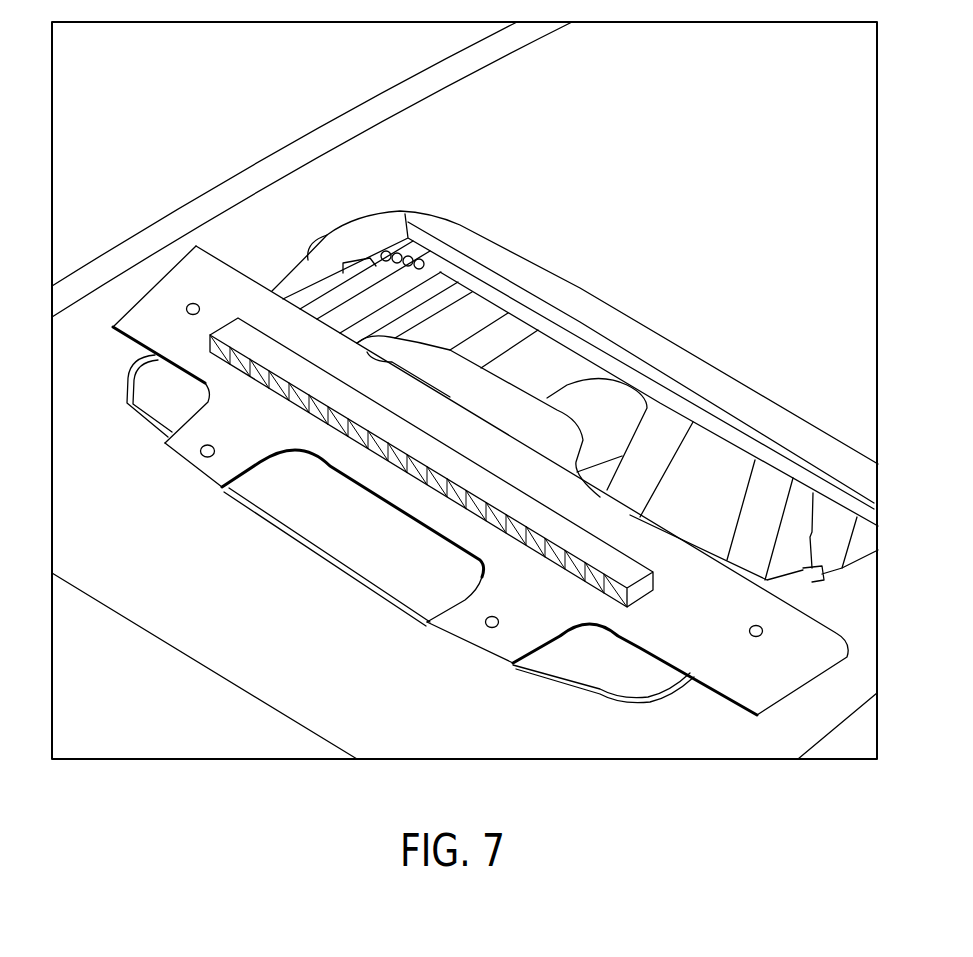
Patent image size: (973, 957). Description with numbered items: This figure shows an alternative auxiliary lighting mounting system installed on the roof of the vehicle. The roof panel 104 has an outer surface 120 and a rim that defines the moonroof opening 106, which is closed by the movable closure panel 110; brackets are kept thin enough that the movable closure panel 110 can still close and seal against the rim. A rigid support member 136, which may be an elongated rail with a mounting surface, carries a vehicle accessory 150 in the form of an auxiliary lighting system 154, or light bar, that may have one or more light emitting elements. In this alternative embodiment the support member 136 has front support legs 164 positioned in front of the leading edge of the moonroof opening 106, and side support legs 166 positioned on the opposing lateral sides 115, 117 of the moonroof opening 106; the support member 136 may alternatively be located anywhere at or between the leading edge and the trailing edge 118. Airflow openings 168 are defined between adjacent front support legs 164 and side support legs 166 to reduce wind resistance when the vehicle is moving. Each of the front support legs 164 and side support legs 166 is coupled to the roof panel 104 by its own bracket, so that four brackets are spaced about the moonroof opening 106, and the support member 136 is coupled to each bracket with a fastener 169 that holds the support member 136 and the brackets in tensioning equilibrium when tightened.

The roof panel 104 is at (786, 106).
The outer surface 120 is at (786, 178).
The lateral side 117 is at (268, 237).
The movable closure panel 110 is at (693, 372).
The trailing edge 118 is at (655, 328).
The moonroof opening 106 is at (553, 348).
The side support legs 166 is at (193, 273).
The support member 136 is at (143, 282).
The vehicle accessory 150 is at (214, 369).
The auxiliary lighting system 154 is at (223, 325).
The front support legs 164 is at (203, 434).
The fastener 169 is at (190, 303).
The airflow openings 168 is at (620, 670).
The lateral side 115 is at (853, 616).